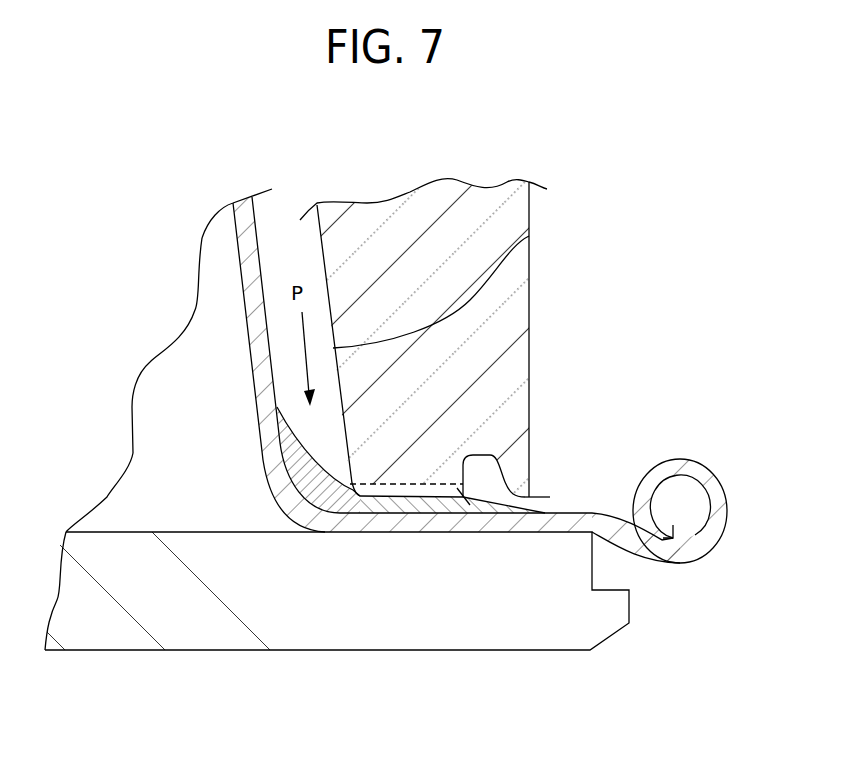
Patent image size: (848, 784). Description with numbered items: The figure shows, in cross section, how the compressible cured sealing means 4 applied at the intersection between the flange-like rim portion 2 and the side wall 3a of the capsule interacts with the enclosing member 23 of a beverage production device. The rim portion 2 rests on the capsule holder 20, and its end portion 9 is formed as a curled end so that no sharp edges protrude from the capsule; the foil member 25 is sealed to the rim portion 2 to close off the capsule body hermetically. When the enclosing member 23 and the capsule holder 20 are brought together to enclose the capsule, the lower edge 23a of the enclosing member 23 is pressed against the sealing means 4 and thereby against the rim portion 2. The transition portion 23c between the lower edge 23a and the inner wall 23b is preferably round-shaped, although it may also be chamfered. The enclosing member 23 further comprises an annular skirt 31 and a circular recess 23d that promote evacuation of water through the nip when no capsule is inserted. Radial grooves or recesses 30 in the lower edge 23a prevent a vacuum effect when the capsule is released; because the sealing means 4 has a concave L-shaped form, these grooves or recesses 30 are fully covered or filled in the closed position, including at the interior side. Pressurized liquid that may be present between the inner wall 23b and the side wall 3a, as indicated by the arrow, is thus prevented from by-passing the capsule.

The flange-like rim portion 2 is at (597, 499).
The side wall 3a is at (255, 217).
The sealing means 4 is at (427, 500).
The end portion 9 is at (728, 503).
The capsule holder 20 is at (540, 628).
The enclosing member 23 is at (530, 307).
The lower edge 23a is at (413, 478).
The inner wall 23b is at (530, 234).
The transition portion 23c is at (355, 497).
The circular recess 23d is at (492, 456).
The foil member 25 is at (120, 532).
The radial grooves or recesses 30 is at (470, 505).
The annular skirt 31 is at (550, 497).